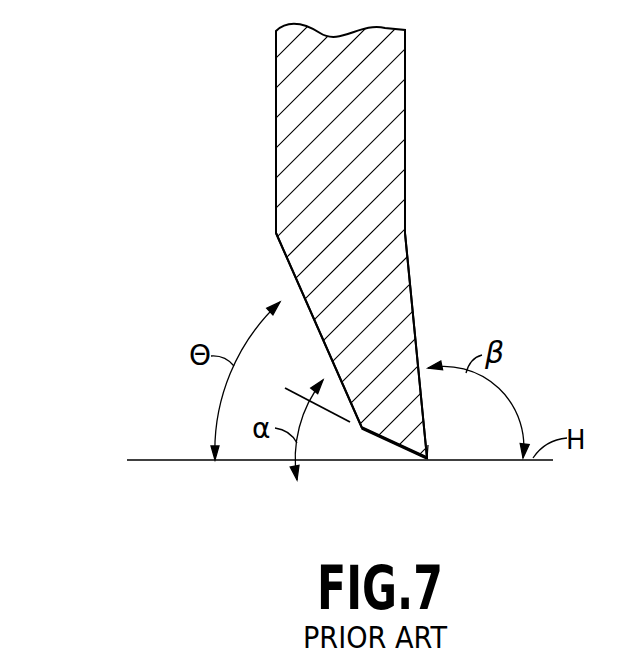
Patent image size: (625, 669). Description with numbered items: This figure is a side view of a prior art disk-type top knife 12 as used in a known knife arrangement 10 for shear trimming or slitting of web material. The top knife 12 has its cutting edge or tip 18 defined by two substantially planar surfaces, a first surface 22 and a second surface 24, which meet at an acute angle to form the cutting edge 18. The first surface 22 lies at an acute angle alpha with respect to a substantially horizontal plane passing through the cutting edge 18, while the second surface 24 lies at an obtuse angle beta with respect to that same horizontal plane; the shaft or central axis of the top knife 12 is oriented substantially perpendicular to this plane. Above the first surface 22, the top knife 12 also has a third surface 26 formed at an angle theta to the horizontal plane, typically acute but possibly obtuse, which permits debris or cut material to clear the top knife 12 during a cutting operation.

The knife arrangement 10 is at (108, 100).
The top knife 12 is at (277, 188).
The third surface 26 is at (323, 340).
The second surface 24 is at (423, 418).
The first surface 22 is at (403, 447).
The cutting edge 18 is at (428, 460).